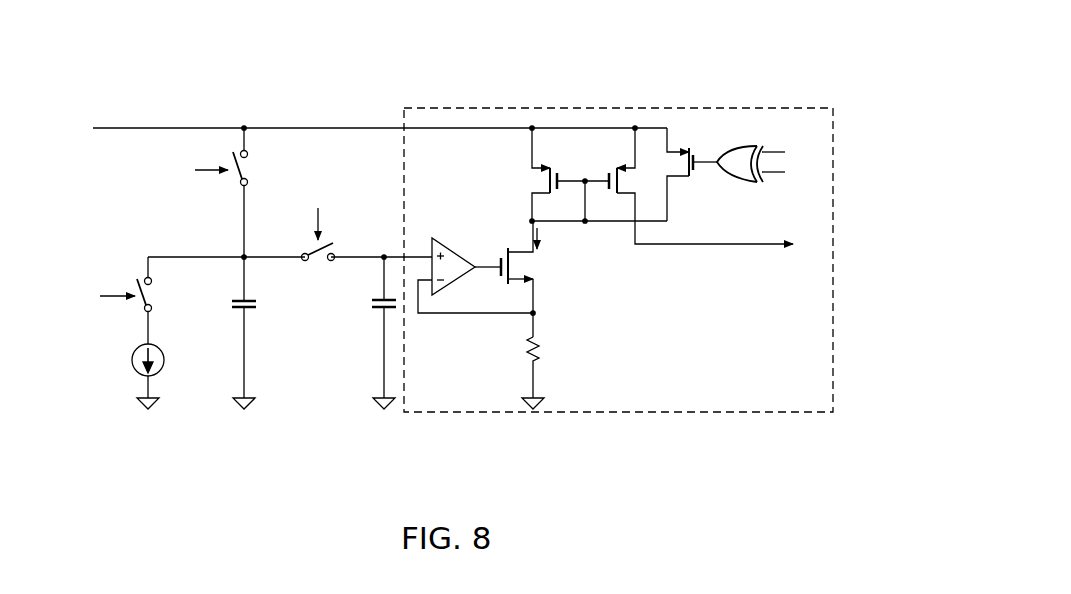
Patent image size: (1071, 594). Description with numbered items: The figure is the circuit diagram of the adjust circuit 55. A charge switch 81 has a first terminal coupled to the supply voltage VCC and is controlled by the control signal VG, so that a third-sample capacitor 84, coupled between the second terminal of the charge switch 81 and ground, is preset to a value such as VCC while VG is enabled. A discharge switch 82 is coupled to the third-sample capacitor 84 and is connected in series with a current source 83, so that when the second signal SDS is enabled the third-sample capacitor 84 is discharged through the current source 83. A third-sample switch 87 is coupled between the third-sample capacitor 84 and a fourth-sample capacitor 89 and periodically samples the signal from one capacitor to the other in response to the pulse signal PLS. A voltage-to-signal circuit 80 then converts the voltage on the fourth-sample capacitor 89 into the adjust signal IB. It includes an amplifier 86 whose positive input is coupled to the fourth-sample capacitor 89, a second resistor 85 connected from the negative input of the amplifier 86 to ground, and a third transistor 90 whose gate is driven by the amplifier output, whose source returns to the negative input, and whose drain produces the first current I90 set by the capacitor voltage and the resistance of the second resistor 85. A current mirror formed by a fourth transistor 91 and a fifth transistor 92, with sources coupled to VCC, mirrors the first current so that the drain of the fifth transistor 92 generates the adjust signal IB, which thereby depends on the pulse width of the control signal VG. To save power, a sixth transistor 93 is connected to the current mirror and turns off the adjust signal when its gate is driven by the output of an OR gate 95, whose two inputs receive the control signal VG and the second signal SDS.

The adjust circuit 55 is at (808, 47).
The voltage-to-signal circuit 80 is at (693, 107).
The charge switch 81 is at (248, 168).
The discharge switch 82 is at (153, 296).
The current source 83 is at (132, 364).
The third-sample capacitor 84 is at (238, 312).
The second resistor 85 is at (542, 354).
The amplifier 86 is at (454, 245).
The third-sample switch 87 is at (305, 246).
The fourth-sample capacitor 89 is at (377, 309).
The third transistor 90 is at (530, 267).
The fourth transistor 91 is at (537, 178).
The fifth transistor 92 is at (632, 183).
The sixth transistor 93 is at (681, 177).
The OR gate 95 is at (742, 184).